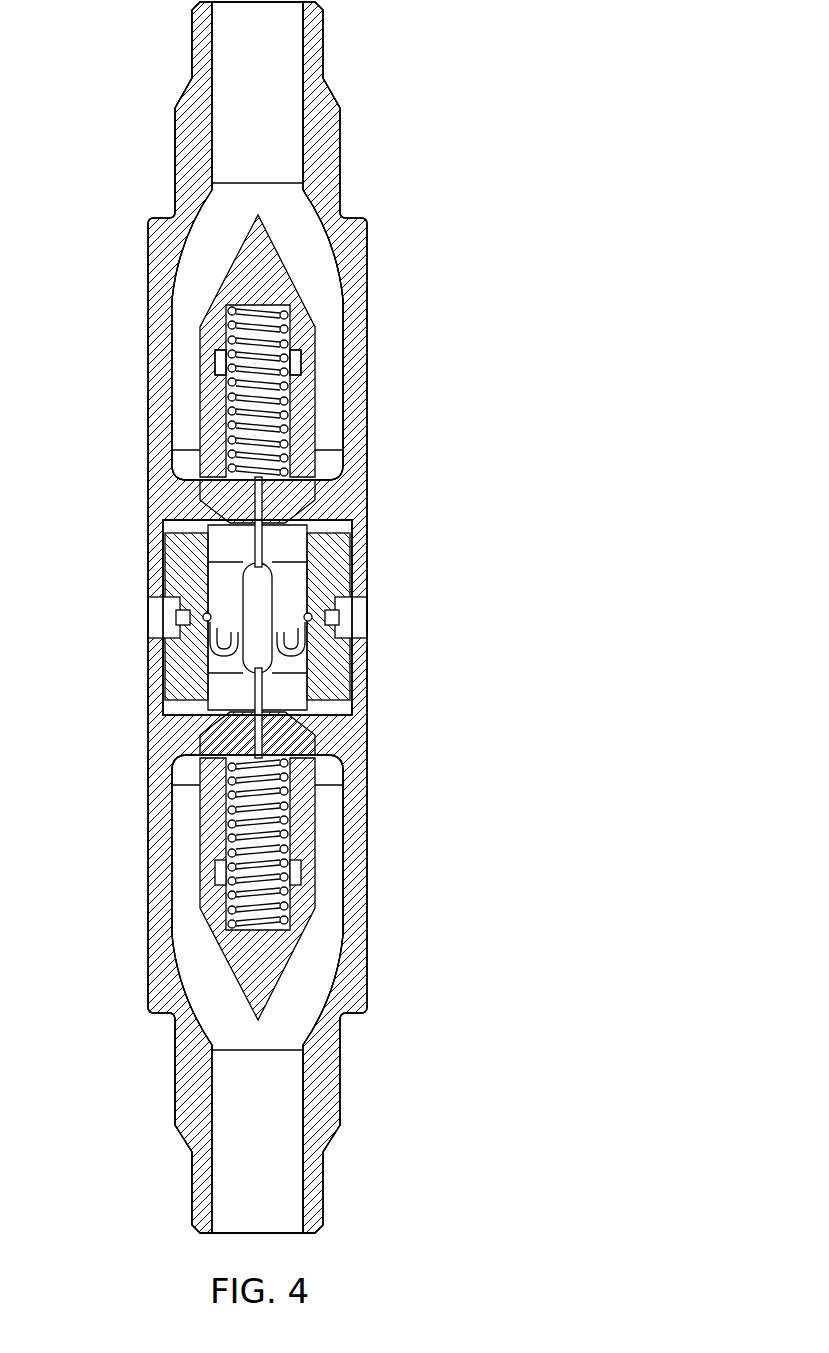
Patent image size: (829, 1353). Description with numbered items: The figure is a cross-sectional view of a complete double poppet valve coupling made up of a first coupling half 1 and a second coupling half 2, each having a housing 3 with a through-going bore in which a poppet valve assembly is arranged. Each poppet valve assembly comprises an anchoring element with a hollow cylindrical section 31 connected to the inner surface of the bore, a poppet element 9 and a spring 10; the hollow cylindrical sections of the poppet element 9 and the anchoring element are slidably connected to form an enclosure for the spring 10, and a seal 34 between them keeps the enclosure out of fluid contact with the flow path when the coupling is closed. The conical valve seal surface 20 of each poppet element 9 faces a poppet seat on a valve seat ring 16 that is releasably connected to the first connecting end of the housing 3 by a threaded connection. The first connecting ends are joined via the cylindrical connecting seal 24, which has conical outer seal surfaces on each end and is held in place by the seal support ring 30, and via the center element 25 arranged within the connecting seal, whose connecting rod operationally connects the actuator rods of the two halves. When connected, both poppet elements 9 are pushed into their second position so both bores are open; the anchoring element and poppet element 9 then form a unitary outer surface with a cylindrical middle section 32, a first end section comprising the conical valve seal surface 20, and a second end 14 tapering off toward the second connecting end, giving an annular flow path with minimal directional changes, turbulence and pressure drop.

The first coupling half 1 is at (375, 1030).
The second coupling half 2 is at (135, 200).
The housing 3 is at (178, 987).
The poppet element 9 is at (343, 750).
The spring 10 is at (207, 887).
The second end 14 is at (296, 272).
The valve seat ring 16 is at (170, 680).
The conical valve seal surface 20 is at (203, 507).
The cylindrical connecting seal 24 is at (317, 598).
The center element 25 is at (347, 692).
The seal support ring 30 is at (170, 625).
The cylindrical section 31 is at (207, 840).
The cylindrical middle section 32 is at (317, 382).
The seal 34 is at (205, 360).